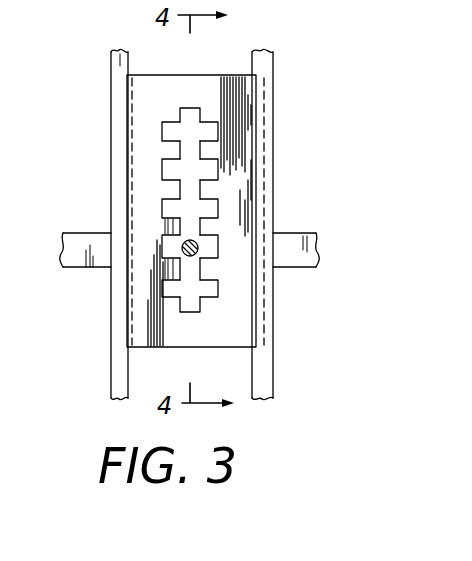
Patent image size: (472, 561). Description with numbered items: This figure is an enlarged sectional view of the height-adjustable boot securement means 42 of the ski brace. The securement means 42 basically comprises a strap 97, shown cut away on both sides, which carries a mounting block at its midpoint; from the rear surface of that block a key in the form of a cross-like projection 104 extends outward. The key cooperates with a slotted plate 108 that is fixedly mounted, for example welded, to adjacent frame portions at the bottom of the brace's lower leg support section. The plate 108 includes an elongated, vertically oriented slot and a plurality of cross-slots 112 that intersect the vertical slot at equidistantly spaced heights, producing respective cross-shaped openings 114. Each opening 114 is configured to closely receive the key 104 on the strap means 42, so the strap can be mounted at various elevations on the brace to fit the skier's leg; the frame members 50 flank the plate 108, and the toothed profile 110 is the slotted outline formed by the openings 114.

The boot securement means 42 is at (97, 268).
The channel member 50 is at (114, 105).
The strap 97 is at (303, 258).
The cross-like projection 104 is at (198, 247).
The slotted plate 108 is at (173, 73).
The toothed member 110 is at (192, 118).
The cross-slots 112 is at (212, 132).
The cross-shaped openings 114 is at (188, 209).